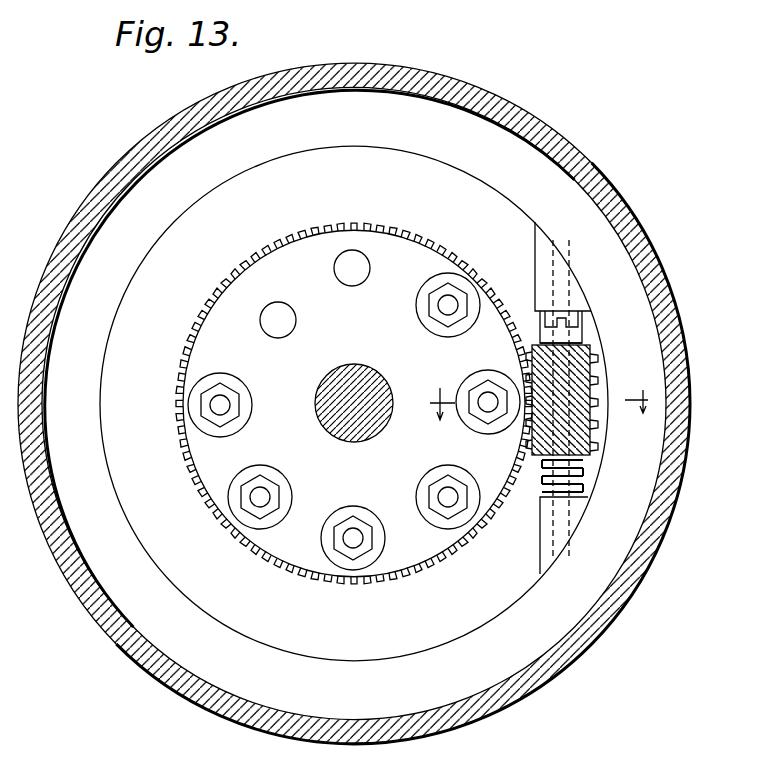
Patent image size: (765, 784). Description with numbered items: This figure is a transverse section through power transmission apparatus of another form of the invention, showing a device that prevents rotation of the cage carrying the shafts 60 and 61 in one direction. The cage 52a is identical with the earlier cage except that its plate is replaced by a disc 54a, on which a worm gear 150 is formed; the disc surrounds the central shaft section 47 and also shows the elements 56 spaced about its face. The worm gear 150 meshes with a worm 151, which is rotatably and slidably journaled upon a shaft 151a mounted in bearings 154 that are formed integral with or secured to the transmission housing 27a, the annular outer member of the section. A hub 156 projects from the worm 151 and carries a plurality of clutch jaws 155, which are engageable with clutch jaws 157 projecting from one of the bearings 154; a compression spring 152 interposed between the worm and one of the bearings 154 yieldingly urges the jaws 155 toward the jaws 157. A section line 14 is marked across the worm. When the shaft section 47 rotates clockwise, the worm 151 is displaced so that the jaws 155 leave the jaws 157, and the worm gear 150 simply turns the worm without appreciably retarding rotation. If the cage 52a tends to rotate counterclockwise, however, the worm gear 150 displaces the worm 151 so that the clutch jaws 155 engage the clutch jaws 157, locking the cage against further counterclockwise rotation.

The transmission housing 27a is at (389, 59).
The cage 52a is at (384, 237).
The disc 54a is at (392, 290).
The bearings 154 is at (535, 256).
The clutch jaws 157 is at (566, 321).
The clutch jaws 155 is at (582, 322).
The hub 156 is at (581, 334).
The worm 151 is at (594, 363).
The shaft 151a is at (582, 463).
The compression spring 152 is at (584, 473).
The worm gear 150 is at (519, 466).
The section line 14 is at (539, 404).
The shaft section 47 is at (368, 416).
The nut 56 is at (353, 536).
The shaft 60 is at (353, 270).
The shaft 61 is at (279, 321).